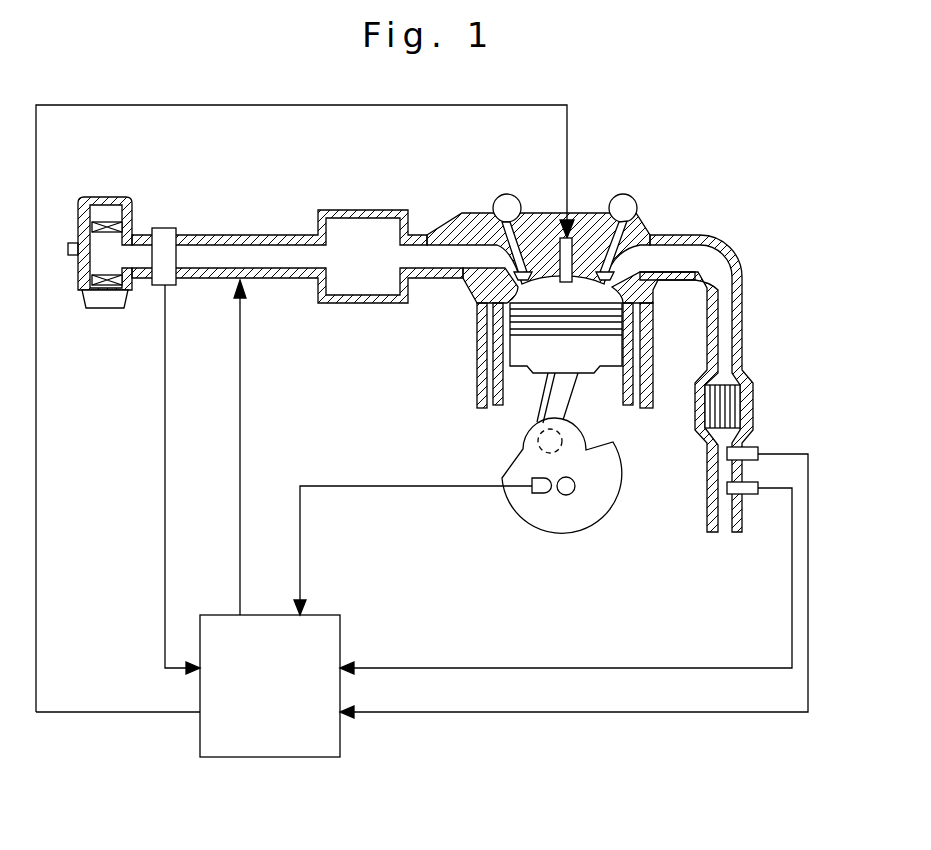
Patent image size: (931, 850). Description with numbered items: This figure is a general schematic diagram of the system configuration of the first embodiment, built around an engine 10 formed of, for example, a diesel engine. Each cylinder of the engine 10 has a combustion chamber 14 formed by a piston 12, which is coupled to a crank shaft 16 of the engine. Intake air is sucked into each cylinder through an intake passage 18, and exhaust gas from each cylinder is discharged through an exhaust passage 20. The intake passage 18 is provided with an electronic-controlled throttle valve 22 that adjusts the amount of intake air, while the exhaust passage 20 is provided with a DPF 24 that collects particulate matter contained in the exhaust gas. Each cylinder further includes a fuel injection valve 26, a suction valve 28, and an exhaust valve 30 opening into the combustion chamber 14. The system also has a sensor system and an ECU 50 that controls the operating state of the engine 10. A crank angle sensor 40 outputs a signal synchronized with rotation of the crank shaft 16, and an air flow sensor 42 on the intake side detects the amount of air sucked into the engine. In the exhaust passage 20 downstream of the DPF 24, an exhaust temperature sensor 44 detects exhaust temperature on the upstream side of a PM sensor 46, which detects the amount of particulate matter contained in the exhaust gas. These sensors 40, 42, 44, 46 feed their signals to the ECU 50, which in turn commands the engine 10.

The engine 10 is at (466, 394).
The piston 12 is at (523, 352).
The combustion chamber 14 is at (657, 292).
The crank shaft 16 is at (580, 490).
The intake passage 18 is at (328, 211).
The exhaust passage 20 is at (742, 313).
The electronic-controlled throttle valve 22 is at (247, 255).
The DPF (Diesel Particulate Filter) 24 is at (743, 389).
The fuel injection valve 26 is at (573, 262).
The suction valve 28 is at (490, 228).
The exhaust valve 30 is at (642, 242).
The crank angle sensor 40 is at (538, 495).
The air flow sensor 42 is at (163, 228).
The exhaust temperature sensor 44 is at (757, 448).
The PM sensor 46 is at (748, 497).
The ECU (Electronic Control Unit) 50 is at (265, 757).